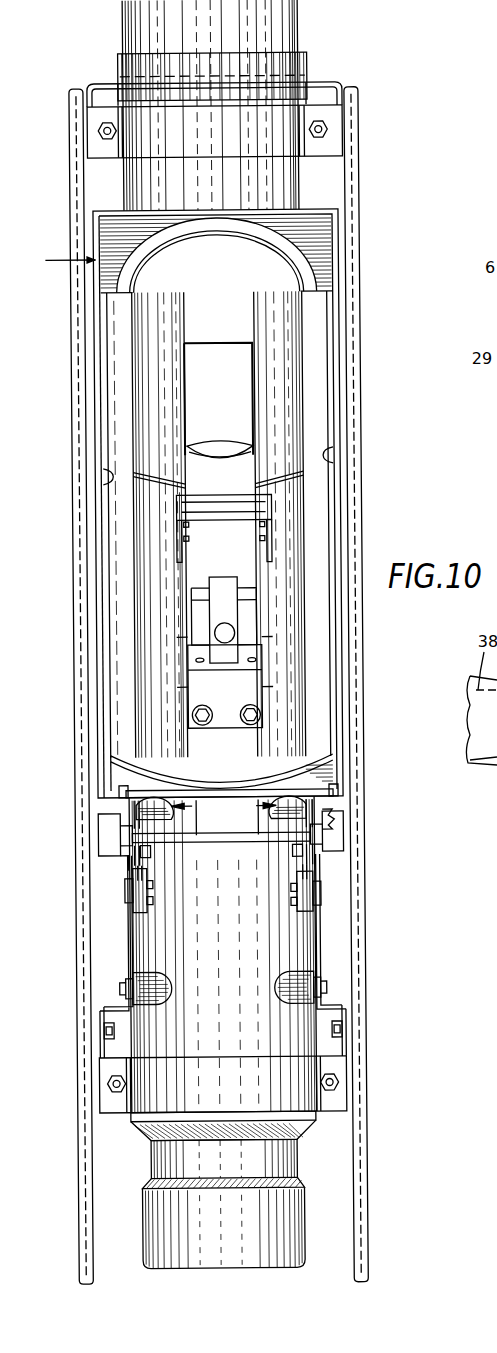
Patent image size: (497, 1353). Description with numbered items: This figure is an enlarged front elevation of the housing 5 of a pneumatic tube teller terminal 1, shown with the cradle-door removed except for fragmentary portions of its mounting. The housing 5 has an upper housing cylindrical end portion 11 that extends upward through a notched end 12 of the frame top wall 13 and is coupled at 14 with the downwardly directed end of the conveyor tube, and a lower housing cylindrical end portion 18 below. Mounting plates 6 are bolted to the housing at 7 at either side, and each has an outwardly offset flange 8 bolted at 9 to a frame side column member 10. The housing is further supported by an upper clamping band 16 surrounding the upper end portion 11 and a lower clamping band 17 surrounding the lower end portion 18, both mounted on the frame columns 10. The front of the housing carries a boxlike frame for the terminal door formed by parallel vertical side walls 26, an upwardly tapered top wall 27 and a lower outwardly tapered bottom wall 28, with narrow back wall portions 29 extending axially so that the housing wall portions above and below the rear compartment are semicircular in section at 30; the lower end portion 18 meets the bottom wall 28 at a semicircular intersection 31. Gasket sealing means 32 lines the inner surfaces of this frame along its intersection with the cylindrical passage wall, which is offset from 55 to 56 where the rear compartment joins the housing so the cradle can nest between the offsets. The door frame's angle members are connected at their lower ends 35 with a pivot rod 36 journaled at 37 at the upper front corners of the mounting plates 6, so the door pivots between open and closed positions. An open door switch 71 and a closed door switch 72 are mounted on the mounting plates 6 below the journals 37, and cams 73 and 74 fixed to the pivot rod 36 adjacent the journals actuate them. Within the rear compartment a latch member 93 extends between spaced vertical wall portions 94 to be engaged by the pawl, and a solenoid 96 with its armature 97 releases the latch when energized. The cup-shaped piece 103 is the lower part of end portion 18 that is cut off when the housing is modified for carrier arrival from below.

The teller terminal 1 is at (378, 52).
The housing 5 is at (366, 230).
The mounting plates 6 is at (122, 939).
The bolts 7 is at (118, 986).
The outwardly offset flange 8 is at (322, 1014).
The bolts 9 is at (96, 1028).
The frame side column member 10 is at (364, 1125).
The upper housing cylindrical end portion 11 is at (155, 183).
The notched end 12 is at (308, 83).
The frame top wall 13 is at (104, 82).
The coupling 14 is at (214, 68).
The upper clamping band 16 is at (318, 112).
The lower clamping band 17 is at (194, 1094).
The lower housing cylindrical end portion 18 is at (200, 1041).
The vertical side walls 26 is at (332, 453).
The top wall 27 is at (315, 260).
The bottom wall 28 is at (120, 766).
The back wall portions 29 is at (106, 409).
The semicircular housing wall portions 30 is at (290, 383).
The semicircular intersection 31 is at (296, 755).
The gasket sealing means 32 is at (120, 603).
The lower ends of angle members 35 is at (330, 818).
The pivot rod 36 is at (218, 840).
The journals 37 is at (106, 831).
The offset 55 is at (300, 478).
The offset 56 is at (128, 758).
The open door switch 71 is at (130, 899).
The closed door switch 72 is at (306, 894).
The cam 73 is at (142, 850).
The cam 74 is at (292, 853).
The latch member 93 is at (222, 518).
The vertical wall portions 94 is at (172, 578).
The solenoid 96 is at (240, 610).
The armature 97 is at (220, 644).
The cup-shaped piece 103 is at (210, 1234).